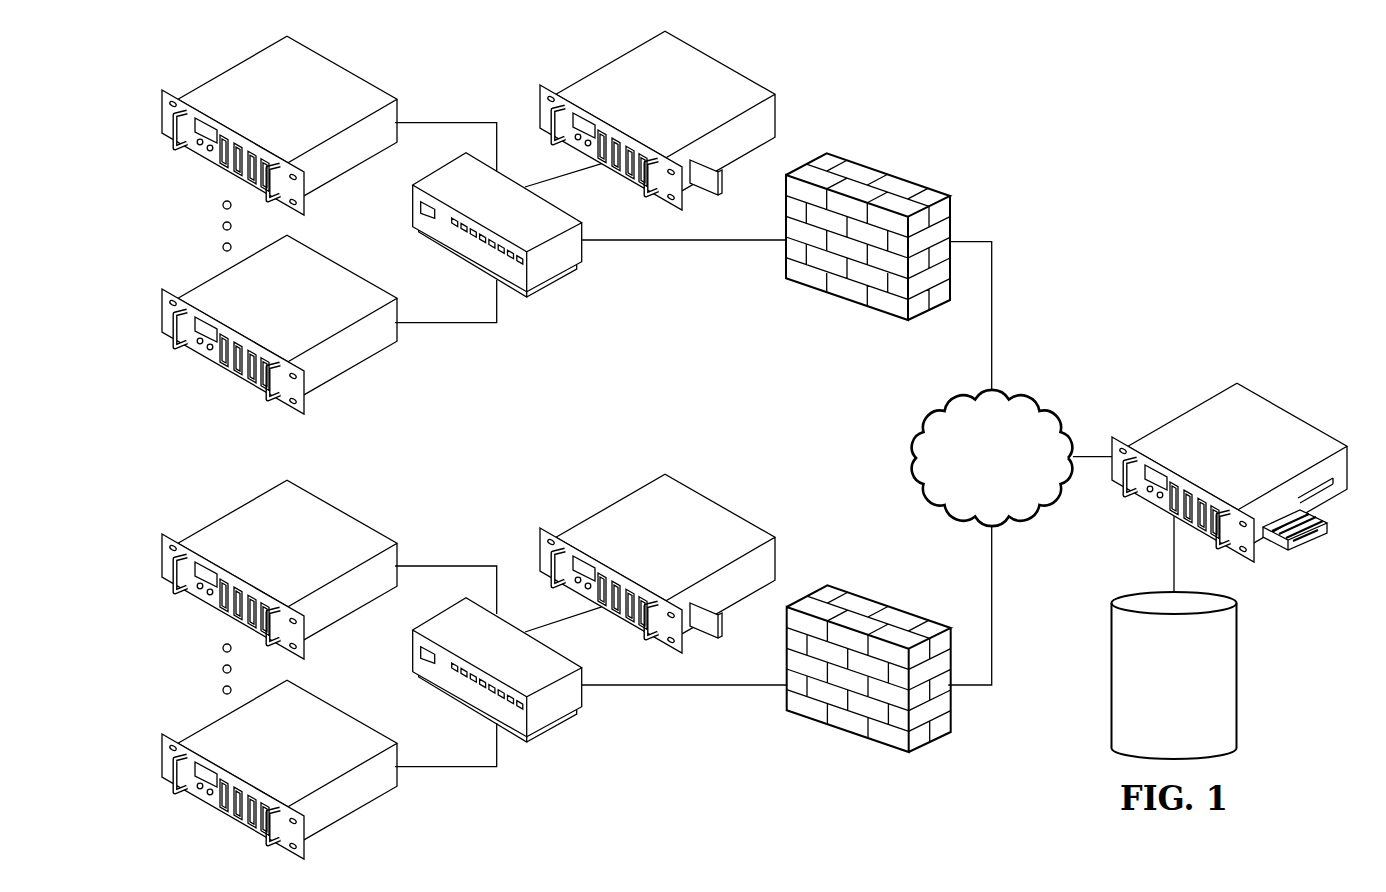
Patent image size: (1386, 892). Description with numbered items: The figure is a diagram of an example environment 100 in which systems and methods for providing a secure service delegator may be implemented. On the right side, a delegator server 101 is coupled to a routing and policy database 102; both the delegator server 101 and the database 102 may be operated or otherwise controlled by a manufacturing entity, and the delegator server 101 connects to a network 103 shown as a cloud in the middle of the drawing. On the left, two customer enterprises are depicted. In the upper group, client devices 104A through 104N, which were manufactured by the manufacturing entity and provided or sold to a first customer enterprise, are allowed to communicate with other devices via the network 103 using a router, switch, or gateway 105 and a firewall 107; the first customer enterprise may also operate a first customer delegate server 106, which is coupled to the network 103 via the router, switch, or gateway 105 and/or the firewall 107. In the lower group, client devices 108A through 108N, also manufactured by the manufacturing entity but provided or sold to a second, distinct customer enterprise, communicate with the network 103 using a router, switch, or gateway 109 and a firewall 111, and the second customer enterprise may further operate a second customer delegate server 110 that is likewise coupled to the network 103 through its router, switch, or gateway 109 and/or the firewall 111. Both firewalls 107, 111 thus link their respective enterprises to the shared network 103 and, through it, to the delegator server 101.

The environment 100 is at (1136, 168).
The delegator server 101 is at (1290, 413).
The routing and policy database 102 is at (1195, 694).
The network 103 is at (1011, 472).
The client device 104A is at (162, 111).
The client device 104N is at (162, 310).
The router, switch, or gateway 105 is at (550, 288).
The first customer delegate server 106 is at (717, 62).
The firewall 107 is at (887, 173).
The client device 108A is at (162, 553).
The client device 108N is at (162, 755).
The router, switch, or gateway 109 is at (550, 728).
The second customer delegate server 110 is at (717, 505).
The firewall 111 is at (933, 740).